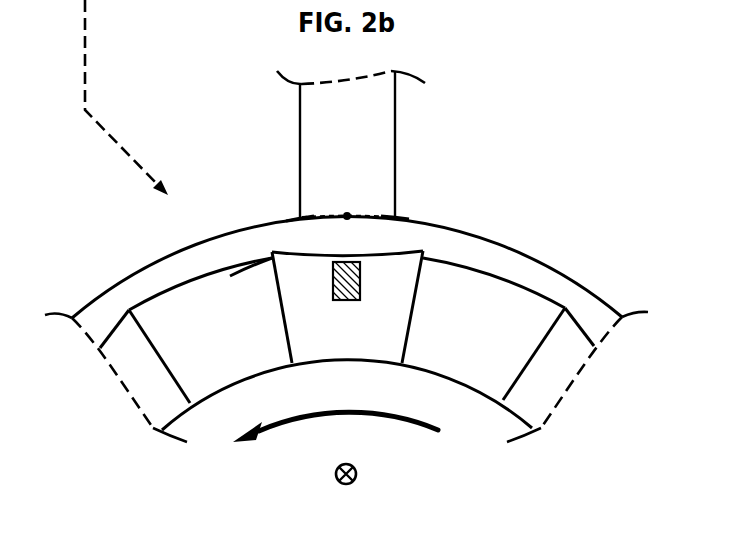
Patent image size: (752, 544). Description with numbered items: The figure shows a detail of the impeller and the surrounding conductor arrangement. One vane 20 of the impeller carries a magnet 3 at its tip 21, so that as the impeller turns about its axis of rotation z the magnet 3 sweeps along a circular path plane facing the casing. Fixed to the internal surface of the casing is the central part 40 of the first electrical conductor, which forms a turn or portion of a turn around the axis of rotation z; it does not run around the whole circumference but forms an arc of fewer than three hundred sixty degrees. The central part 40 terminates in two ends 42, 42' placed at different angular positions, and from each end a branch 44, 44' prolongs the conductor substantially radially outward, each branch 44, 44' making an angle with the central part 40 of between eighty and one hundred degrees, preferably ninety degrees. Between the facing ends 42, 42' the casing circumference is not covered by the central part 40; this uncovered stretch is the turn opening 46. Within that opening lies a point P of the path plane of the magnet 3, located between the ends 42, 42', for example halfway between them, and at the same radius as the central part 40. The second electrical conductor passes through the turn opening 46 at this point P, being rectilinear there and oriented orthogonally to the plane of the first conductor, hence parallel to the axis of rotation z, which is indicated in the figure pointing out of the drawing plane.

The central part 40 is at (496, 228).
The tip 21 is at (300, 250).
The vane 20 is at (358, 335).
The magnet 3 is at (347, 279).
The branch 44 is at (328, 151).
The branch 44' is at (367, 145).
The turn opening 46 is at (320, 210).
The point P is at (349, 213).
The end 42 is at (281, 186).
The end 42' is at (414, 185).
The axis of rotation z is at (357, 475).